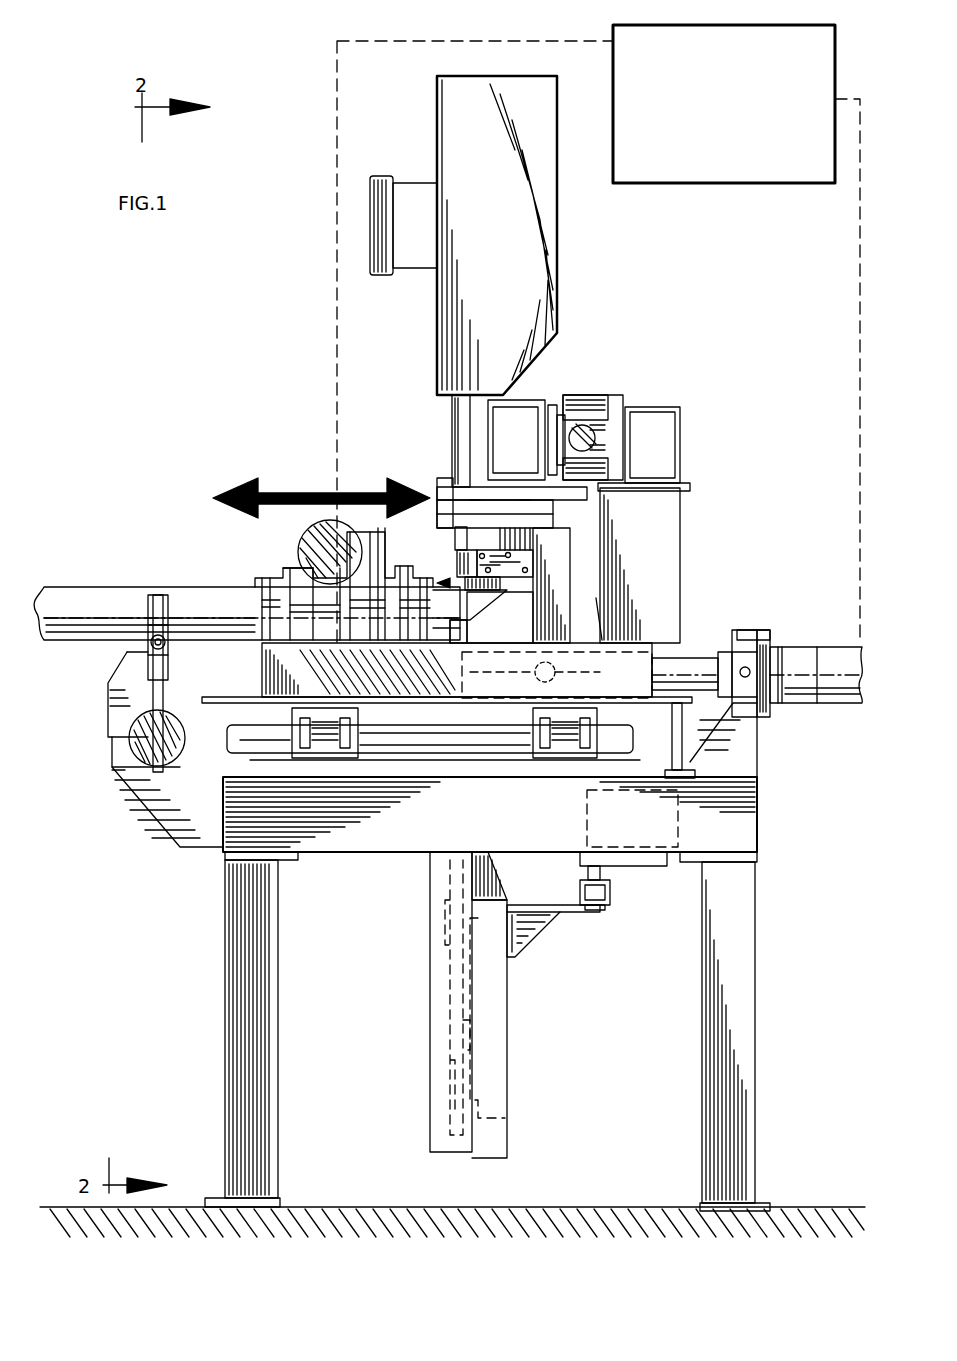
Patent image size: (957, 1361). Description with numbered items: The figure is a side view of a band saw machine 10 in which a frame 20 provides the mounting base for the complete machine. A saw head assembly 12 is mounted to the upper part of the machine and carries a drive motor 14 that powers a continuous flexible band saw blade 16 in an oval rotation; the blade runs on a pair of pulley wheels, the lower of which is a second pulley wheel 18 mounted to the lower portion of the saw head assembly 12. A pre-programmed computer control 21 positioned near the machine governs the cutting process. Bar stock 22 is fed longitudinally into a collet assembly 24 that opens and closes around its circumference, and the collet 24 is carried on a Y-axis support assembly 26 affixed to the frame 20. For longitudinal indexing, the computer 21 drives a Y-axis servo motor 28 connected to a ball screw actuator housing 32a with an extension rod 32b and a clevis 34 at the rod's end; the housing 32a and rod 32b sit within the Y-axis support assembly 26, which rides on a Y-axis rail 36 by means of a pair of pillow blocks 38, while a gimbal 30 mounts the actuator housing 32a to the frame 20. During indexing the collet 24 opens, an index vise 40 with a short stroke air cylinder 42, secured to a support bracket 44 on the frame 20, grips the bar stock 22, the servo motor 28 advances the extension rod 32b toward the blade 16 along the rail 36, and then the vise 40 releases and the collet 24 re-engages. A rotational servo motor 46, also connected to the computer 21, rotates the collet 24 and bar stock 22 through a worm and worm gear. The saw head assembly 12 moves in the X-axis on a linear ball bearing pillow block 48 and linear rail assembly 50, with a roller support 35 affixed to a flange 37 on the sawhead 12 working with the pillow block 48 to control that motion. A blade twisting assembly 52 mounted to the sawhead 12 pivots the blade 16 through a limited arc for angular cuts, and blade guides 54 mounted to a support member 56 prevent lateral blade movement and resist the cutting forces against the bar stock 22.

The band saw machine 10 is at (320, 180).
The saw head assembly 12 is at (548, 240).
The drive motor 14 is at (410, 260).
The band saw blade 16 is at (452, 407).
The second pulley wheel 18 is at (447, 967).
The frame 20 is at (758, 796).
The pre-programmed computer control 21 is at (728, 164).
The bar stock 22 is at (80, 598).
The collet assembly 24 is at (552, 590).
The Y-axis support assembly 26 is at (283, 680).
The Y-axis servo motor 28 is at (795, 655).
The gimbal 30 is at (748, 630).
The ball screw actuator housing 32a is at (688, 660).
The extension rod 32b is at (560, 633).
The clevis 34 is at (608, 618).
The roller support 35 is at (605, 905).
The Y-axis rail 36 is at (250, 757).
The flange 37 is at (563, 915).
The pillow blocks 38 is at (325, 743).
The index vise 40 is at (130, 638).
The short stroke air cylinder 42 is at (140, 742).
The support bracket 44 is at (112, 697).
The rotational servo motor 46 is at (333, 542).
The linear ball bearing pillow block 48 is at (594, 398).
The linear rail assembly 50 is at (582, 425).
The blade twisting assembly 52 is at (572, 506).
The blade guides 54 is at (456, 557).
The support member 56 is at (520, 553).